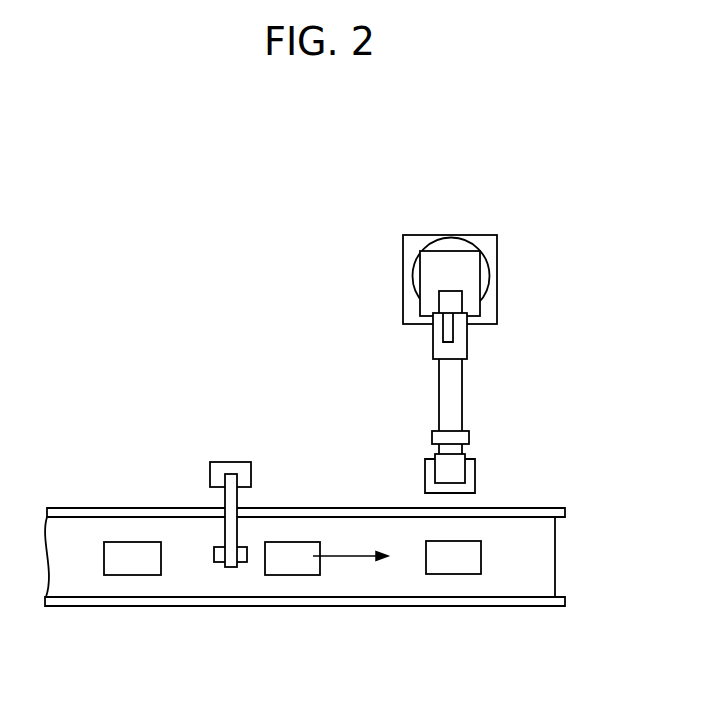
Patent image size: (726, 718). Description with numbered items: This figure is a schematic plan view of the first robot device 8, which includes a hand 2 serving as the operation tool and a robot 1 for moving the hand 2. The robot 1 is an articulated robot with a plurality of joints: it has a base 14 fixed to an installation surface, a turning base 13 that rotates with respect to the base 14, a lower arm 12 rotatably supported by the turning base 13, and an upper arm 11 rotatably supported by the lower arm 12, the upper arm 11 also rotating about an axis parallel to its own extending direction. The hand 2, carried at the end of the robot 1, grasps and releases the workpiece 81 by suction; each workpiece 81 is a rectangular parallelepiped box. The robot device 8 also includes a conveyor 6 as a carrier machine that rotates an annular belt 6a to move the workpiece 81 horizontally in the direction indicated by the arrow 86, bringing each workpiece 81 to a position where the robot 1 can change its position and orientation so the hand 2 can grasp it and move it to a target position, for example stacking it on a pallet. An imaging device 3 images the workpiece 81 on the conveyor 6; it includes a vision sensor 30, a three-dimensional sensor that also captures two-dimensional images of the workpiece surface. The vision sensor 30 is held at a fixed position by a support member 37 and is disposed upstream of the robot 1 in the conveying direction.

The first robot device 8 is at (462, 296).
The robot 1 is at (469, 342).
The upper arm 11 is at (453, 396).
The lower arm 12 is at (448, 299).
The turning base 13 is at (467, 268).
The base 14 is at (413, 245).
The hand 2 is at (469, 471).
The imaging device 3 is at (260, 526).
The support member 37 is at (243, 472).
The vision sensor 30 is at (222, 555).
The conveyor 6 is at (305, 596).
The annular belt 6a is at (525, 588).
The workpiece 81 is at (128, 563).
The arrow 86 is at (352, 555).